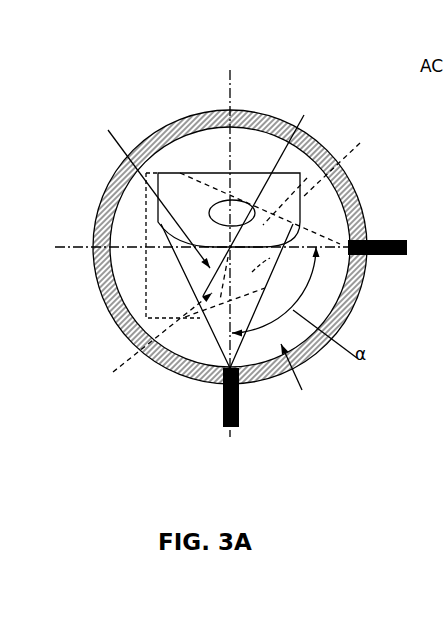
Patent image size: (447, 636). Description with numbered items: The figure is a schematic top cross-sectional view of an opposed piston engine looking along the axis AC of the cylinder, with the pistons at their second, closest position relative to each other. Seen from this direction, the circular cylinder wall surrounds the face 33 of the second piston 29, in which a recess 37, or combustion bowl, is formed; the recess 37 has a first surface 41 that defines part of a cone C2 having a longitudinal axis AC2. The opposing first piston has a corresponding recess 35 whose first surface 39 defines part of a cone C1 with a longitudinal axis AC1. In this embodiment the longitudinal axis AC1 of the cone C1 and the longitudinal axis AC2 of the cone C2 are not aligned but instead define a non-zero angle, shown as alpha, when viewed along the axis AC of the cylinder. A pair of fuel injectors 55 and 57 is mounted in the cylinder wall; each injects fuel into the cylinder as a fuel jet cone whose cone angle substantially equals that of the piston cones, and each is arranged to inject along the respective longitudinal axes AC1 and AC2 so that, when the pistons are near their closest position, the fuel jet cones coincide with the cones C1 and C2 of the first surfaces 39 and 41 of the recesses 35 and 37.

The piston 29 is at (300, 388).
The face 33 is at (127, 280).
The recess 35 is at (150, 337).
The recess 37 is at (194, 188).
The first surface 39 is at (205, 135).
The first surface 41 is at (225, 316).
The fuel injector 55 is at (380, 240).
The fuel injector 57 is at (242, 408).
The axis of the cylinder AC is at (310, 117).
The longitudinal axis of cone C1 AC1 is at (75, 243).
The longitudinal axis of cone C2 AC2 is at (229, 82).
The cone C1 is at (344, 163).
The cone C2 is at (255, 270).